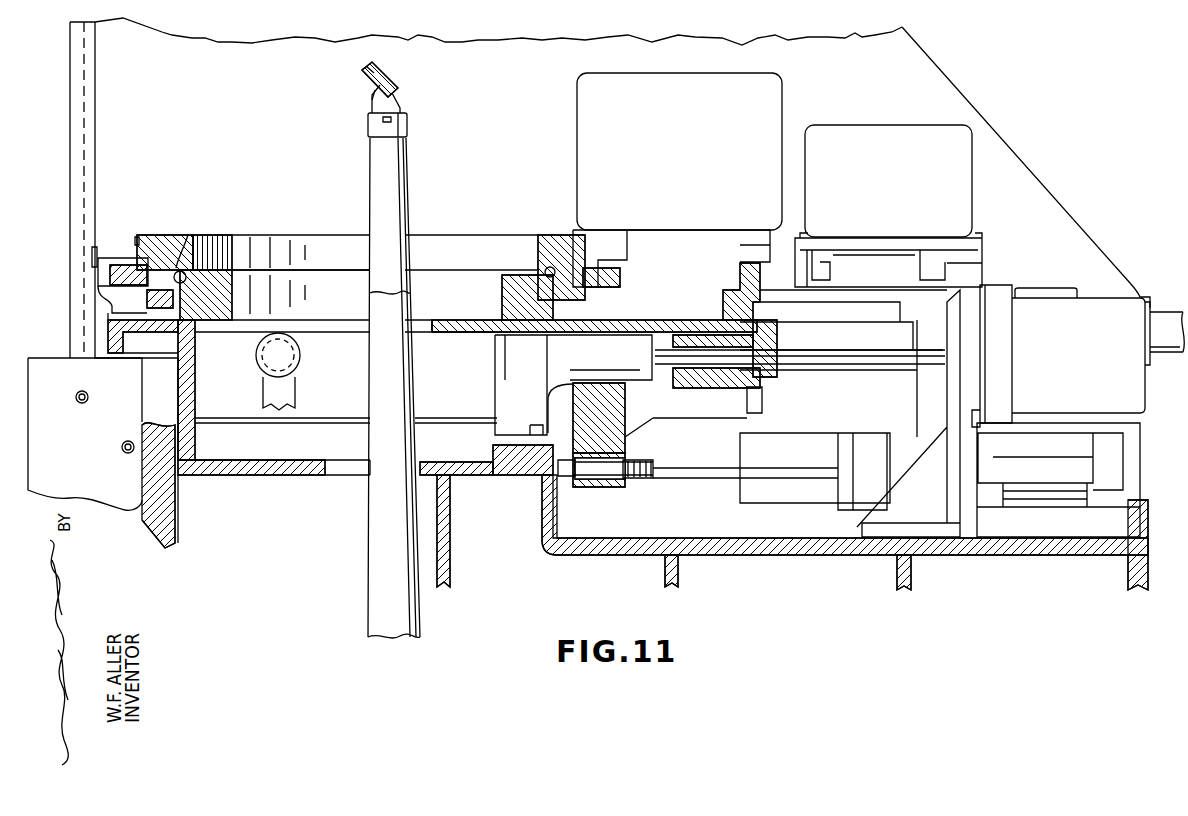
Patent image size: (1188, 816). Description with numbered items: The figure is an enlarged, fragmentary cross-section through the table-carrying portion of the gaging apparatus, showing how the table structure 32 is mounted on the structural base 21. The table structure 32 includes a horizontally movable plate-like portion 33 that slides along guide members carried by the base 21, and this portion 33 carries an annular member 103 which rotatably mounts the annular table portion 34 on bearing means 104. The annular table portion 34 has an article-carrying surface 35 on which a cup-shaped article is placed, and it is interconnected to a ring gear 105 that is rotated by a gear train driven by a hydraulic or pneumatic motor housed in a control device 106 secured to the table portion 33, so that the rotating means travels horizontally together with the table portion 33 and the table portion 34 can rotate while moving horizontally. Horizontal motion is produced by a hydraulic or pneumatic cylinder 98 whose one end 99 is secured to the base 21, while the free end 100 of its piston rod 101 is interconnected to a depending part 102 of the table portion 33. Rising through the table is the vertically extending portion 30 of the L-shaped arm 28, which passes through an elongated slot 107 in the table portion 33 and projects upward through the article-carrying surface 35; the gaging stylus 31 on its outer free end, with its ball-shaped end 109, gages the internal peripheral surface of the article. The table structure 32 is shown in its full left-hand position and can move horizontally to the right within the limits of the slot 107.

The structural base 21 is at (1033, 192).
The L-shaped arm 28 is at (370, 540).
The vertically extending portion of arm 30 is at (372, 188).
The gaging stylus 31 is at (396, 75).
The table structure 32 is at (514, 190).
The plate-like table portion 33 is at (697, 328).
The annular table portion 34 is at (173, 240).
The article-carrying surface 35 is at (152, 233).
The hydraulic or pneumatic cylinder 98 is at (897, 443).
The cylinder end 99 is at (1035, 452).
The free end of piston rod 100 is at (642, 478).
The piston rod 101 is at (757, 462).
The depending part of table portion 102 is at (625, 437).
The annular member 103 is at (503, 295).
The bearing means 104 is at (190, 245).
The ring gear 105 is at (605, 280).
The control device 106 is at (763, 95).
The elongated slot 107 is at (358, 327).
The ball-shaped end 109 is at (362, 64).